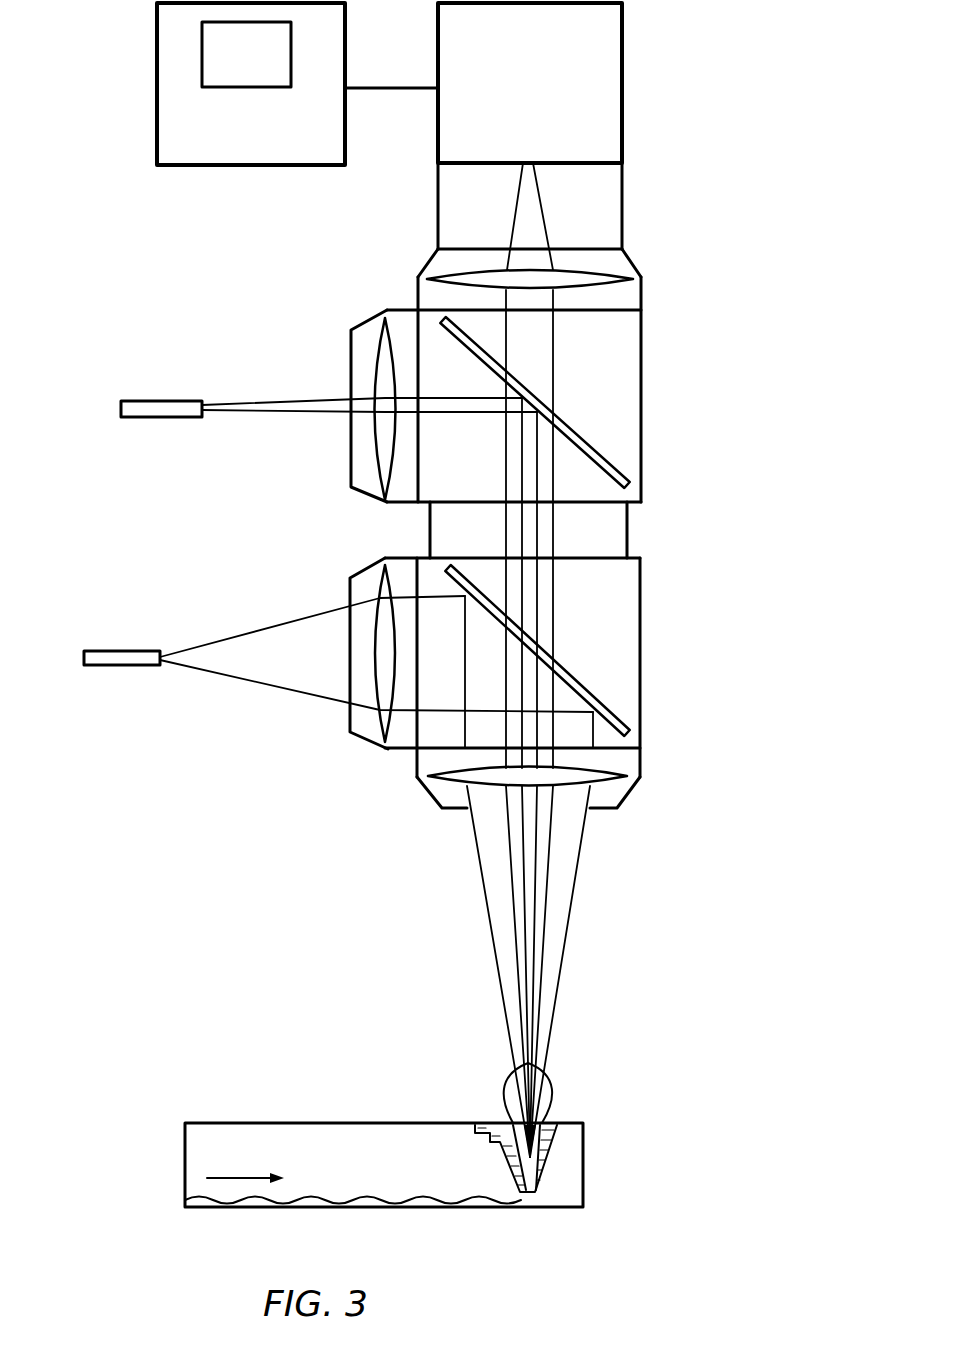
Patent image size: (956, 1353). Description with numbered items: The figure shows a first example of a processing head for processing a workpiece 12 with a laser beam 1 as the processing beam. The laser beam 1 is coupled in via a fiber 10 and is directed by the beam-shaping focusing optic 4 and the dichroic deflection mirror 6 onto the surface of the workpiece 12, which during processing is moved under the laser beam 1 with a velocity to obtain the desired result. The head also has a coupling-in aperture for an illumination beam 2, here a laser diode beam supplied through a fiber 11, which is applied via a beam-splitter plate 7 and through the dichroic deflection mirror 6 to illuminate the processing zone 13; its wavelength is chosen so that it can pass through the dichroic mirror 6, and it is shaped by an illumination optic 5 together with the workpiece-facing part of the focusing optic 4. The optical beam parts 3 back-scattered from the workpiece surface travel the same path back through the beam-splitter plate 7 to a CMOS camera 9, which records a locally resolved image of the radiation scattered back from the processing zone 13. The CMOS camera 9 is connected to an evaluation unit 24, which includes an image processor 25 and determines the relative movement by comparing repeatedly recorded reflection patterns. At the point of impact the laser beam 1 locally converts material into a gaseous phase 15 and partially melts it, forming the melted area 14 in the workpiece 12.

The laser beam 1 is at (492, 877).
The illumination beam 2 is at (537, 917).
The back-scattered optical beam parts 3 is at (533, 220).
The focusing optic 4 is at (380, 727).
The illumination optic 5 is at (378, 353).
The dichroic deflection mirror 6 is at (593, 690).
The beam-splitter plate 7 is at (607, 457).
The CMOS camera 9 is at (602, 85).
The fiber 10 is at (117, 650).
The fiber 11 is at (163, 399).
The workpiece 12 is at (583, 1162).
The processing zone 13 is at (484, 1087).
The melted area 14 is at (507, 1147).
The gaseous phase 15 is at (543, 1088).
The evaluation unit 24 is at (157, 123).
The image processor 25 is at (251, 68).